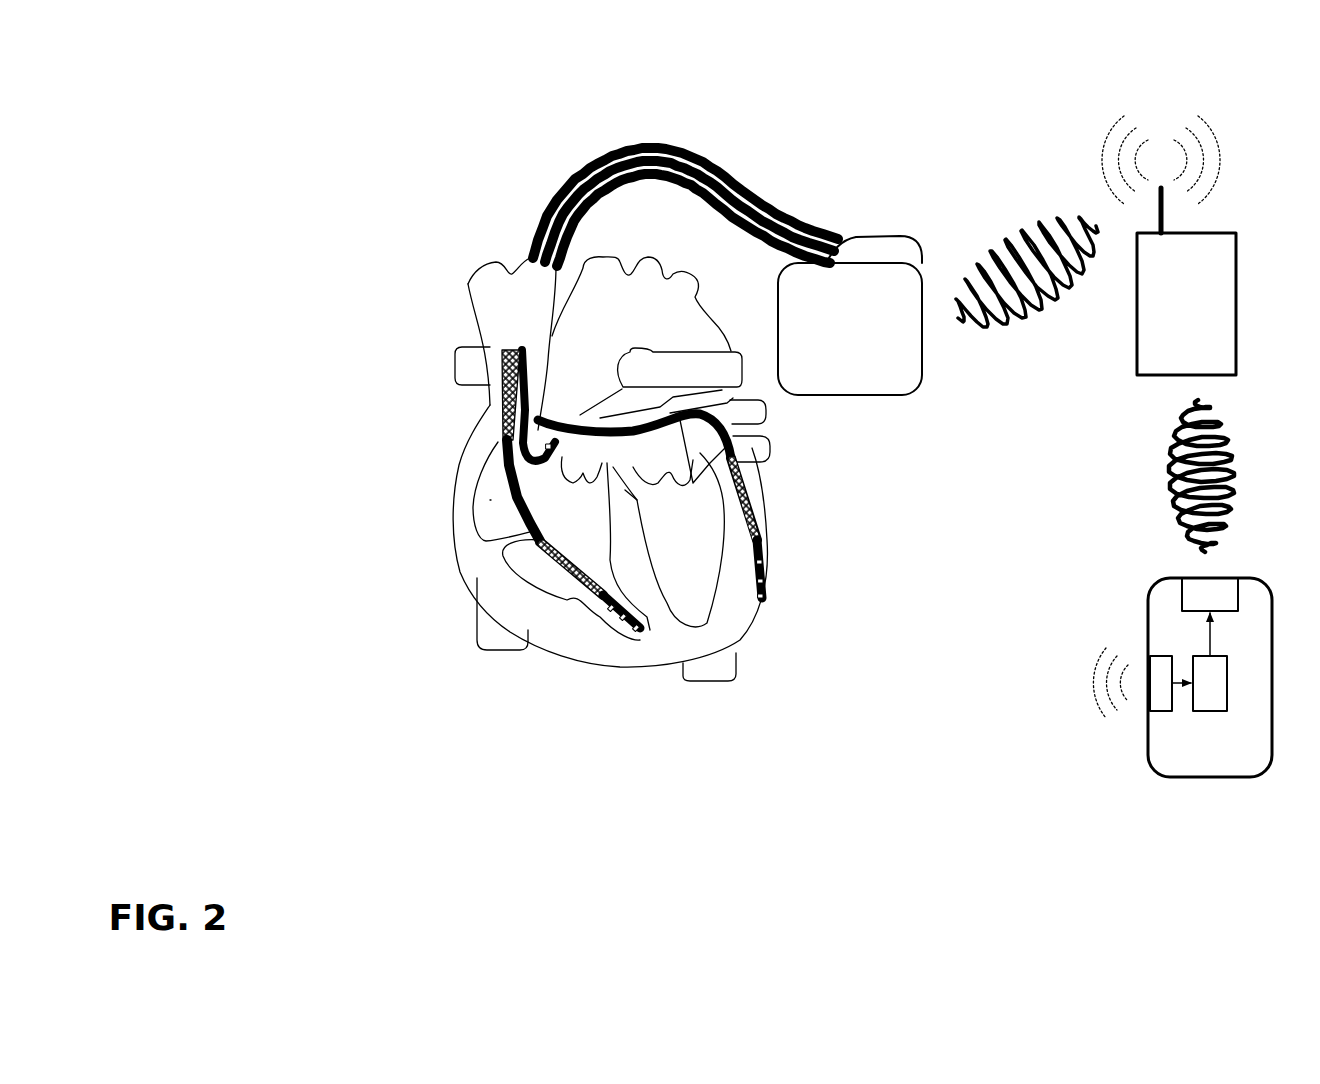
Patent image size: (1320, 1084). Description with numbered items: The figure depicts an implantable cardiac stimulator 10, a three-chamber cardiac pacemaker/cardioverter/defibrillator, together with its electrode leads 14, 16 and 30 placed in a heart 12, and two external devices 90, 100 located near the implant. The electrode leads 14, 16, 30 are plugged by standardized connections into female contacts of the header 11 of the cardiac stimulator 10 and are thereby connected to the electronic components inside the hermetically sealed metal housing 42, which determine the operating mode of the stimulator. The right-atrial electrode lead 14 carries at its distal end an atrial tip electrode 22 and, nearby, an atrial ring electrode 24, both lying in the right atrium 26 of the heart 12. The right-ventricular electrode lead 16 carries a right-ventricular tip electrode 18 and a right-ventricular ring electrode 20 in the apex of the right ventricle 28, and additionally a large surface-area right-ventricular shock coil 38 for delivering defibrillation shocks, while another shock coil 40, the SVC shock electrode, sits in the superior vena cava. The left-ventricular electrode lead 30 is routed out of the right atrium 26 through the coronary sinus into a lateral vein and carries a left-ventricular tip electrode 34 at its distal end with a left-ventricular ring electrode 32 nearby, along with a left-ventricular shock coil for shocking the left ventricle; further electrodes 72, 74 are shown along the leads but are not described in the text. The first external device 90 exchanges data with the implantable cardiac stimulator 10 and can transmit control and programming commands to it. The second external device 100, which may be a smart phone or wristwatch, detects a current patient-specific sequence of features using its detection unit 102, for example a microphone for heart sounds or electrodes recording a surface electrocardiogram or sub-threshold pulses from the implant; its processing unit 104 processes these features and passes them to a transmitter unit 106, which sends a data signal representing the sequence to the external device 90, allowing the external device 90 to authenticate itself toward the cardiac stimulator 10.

The implantable cardiac stimulator 10 is at (975, 380).
The header 11 is at (873, 245).
The heart 12 is at (425, 568).
The right-atrial electrode lead 14 is at (627, 167).
The right-ventricular electrode lead 16 is at (556, 198).
The right-ventricular point electrode RV Tip 18 is at (637, 633).
The right-ventricular ring electrode 20 is at (610, 610).
The atrial tip electrode RA Tip 22 is at (552, 441).
The atrial ring electrode RA Ring 24 is at (553, 448).
The right atrium 26 is at (490, 500).
The right ventricle 28 is at (555, 585).
The left-ventricular electrode lead 30 is at (750, 247).
The left-ventricular ring electrode LV Ring 32 is at (765, 562).
The left-ventricular tip electrode LV Tip 34 is at (760, 600).
The right-ventricular shock coil RV Shock 38 is at (555, 558).
The SVC shock electrode 40 is at (507, 407).
The hermetically sealed metal housing 42 is at (875, 372).
The electrode 72 is at (625, 625).
The electrode 74 is at (765, 582).
The external device 90 is at (1217, 222).
The second external device 100 is at (1125, 745).
The detection unit 102 is at (1155, 655).
The processing unit 104 is at (1210, 695).
The transmitter unit 106 is at (1218, 590).